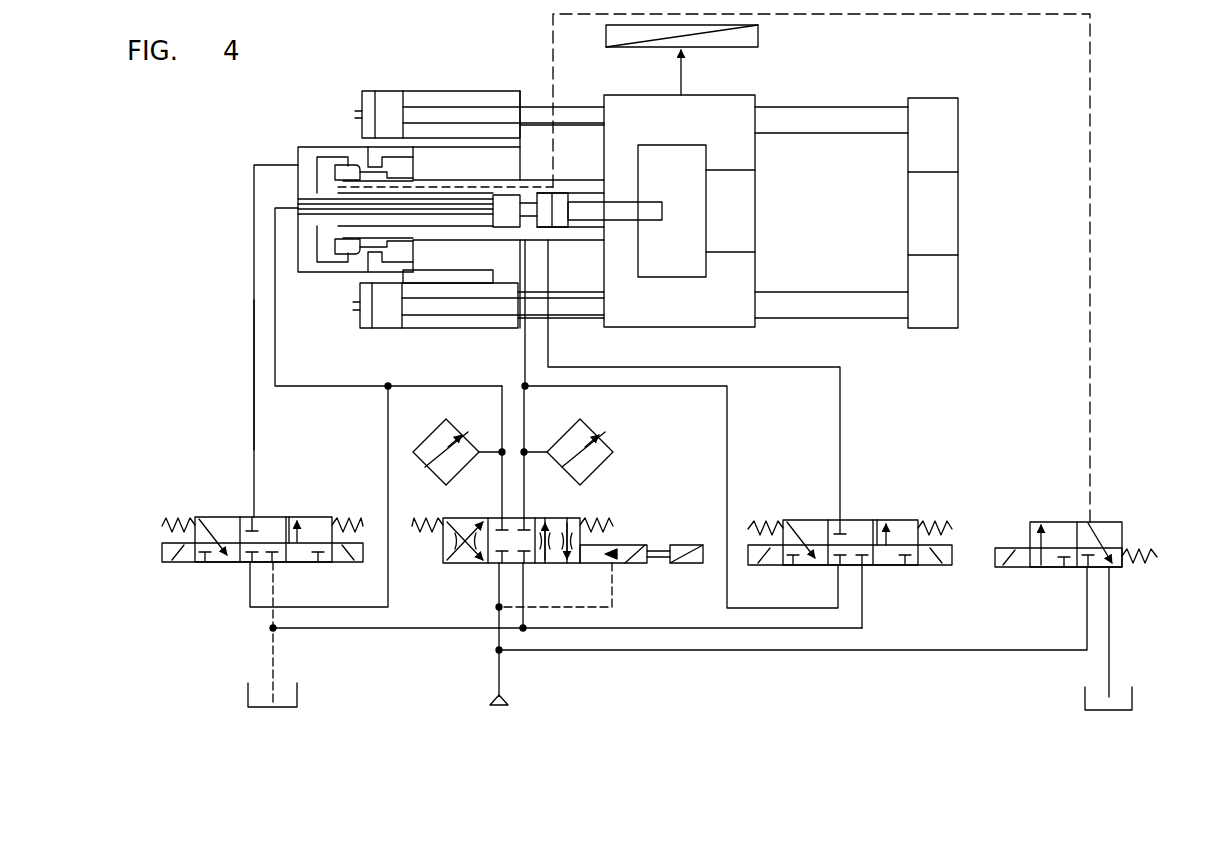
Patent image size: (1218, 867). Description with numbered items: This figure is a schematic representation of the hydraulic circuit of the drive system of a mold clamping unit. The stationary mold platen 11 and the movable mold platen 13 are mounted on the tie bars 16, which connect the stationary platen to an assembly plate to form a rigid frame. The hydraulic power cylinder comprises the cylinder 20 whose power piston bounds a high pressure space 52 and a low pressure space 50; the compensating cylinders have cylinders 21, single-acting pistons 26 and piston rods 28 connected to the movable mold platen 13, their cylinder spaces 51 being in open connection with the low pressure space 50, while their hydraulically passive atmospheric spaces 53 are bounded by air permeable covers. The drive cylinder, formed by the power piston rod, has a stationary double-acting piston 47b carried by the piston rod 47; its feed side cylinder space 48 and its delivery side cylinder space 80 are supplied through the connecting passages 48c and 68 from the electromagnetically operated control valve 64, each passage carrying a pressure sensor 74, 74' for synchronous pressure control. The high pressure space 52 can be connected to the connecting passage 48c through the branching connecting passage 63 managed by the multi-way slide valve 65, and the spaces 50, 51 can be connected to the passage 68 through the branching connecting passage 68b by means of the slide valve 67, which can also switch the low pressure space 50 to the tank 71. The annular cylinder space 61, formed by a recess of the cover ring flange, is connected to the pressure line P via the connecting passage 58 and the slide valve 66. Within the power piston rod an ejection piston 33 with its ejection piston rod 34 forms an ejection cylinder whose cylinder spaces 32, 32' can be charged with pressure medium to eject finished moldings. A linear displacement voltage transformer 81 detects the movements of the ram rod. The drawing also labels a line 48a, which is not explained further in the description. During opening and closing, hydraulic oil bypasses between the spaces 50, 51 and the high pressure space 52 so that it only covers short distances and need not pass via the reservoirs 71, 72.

The stationary mold platen 11 is at (935, 147).
The movable mold platen 13 is at (632, 93).
The tie bars 16 is at (849, 120).
The cylinder 20 is at (425, 272).
The cylinder of compensating cylinder 21 is at (420, 90).
The piston 26 is at (390, 110).
The piston rod 28 is at (483, 110).
The cylinder space 32 is at (645, 192).
The cylinder space 32' is at (445, 117).
The ejection piston 33 is at (562, 205).
The ejection piston rod 34 is at (645, 210).
The piston rod 47 is at (415, 202).
The stationary piston 47b is at (483, 222).
The cylinder space 48 is at (512, 214).
The first hydraulic line 48a is at (323, 195).
The connecting passage 48c is at (274, 328).
The low pressure space 50 is at (437, 258).
The cylinder spaces 51 is at (452, 110).
The high pressure space 52 is at (305, 150).
The atmospheric spaces 53 is at (363, 93).
The connecting passage 58 is at (888, 17).
The annular cylinder space 61 is at (333, 245).
The connecting passage 63 is at (252, 372).
The control valve 64 is at (468, 569).
The multi-way slide valve 65 is at (215, 567).
The slide valve 66 is at (1027, 569).
The slide valve 67 is at (897, 568).
The connecting passage 68 is at (523, 352).
The branching connecting passage 68b is at (728, 470).
The tank 71 is at (290, 680).
The reservoir 72 is at (1122, 692).
The pressure sensor 74 is at (427, 460).
The pressure sensor 74' is at (612, 442).
The cylinder space 80 is at (453, 195).
The linear displacement voltage transformer 81 is at (740, 37).